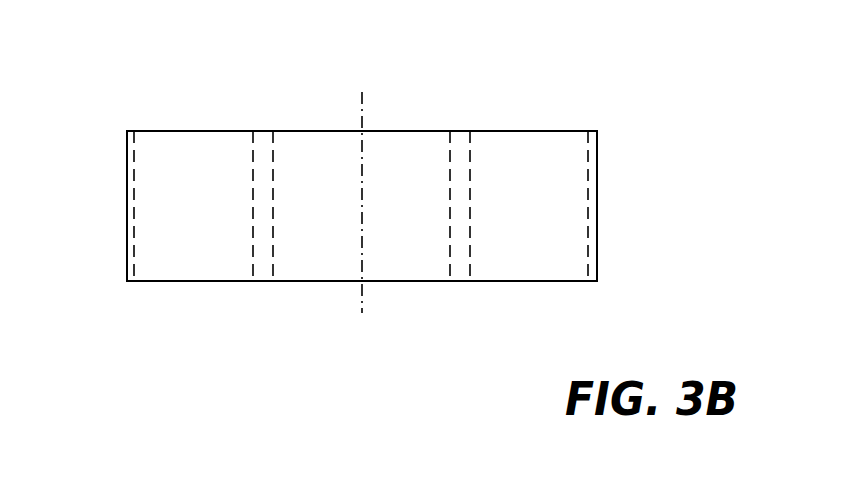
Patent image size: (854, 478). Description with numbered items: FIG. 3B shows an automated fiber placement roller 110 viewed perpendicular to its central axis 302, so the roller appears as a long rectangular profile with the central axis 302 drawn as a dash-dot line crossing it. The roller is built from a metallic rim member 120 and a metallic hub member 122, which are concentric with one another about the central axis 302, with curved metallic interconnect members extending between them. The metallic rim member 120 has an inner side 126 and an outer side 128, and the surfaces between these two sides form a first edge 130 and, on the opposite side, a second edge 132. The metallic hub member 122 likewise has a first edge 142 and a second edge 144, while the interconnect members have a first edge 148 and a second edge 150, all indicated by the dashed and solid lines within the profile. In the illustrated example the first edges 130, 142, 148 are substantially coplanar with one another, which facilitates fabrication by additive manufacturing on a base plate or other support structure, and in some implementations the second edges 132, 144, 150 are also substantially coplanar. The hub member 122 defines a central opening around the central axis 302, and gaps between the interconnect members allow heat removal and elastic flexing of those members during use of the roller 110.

The automated fiber placement roller 110 is at (614, 72).
The metallic rim member 120 is at (597, 228).
The metallic hub member 122 is at (457, 213).
The inner side 126 is at (136, 235).
The outer side 128 is at (127, 206).
The first edge 130 is at (128, 131).
The second edge 132 is at (128, 281).
The first edge 142 is at (263, 131).
The second edge 144 is at (263, 281).
The first edge 148 is at (210, 131).
The second edge 150 is at (210, 281).
The central axis 302 is at (363, 100).